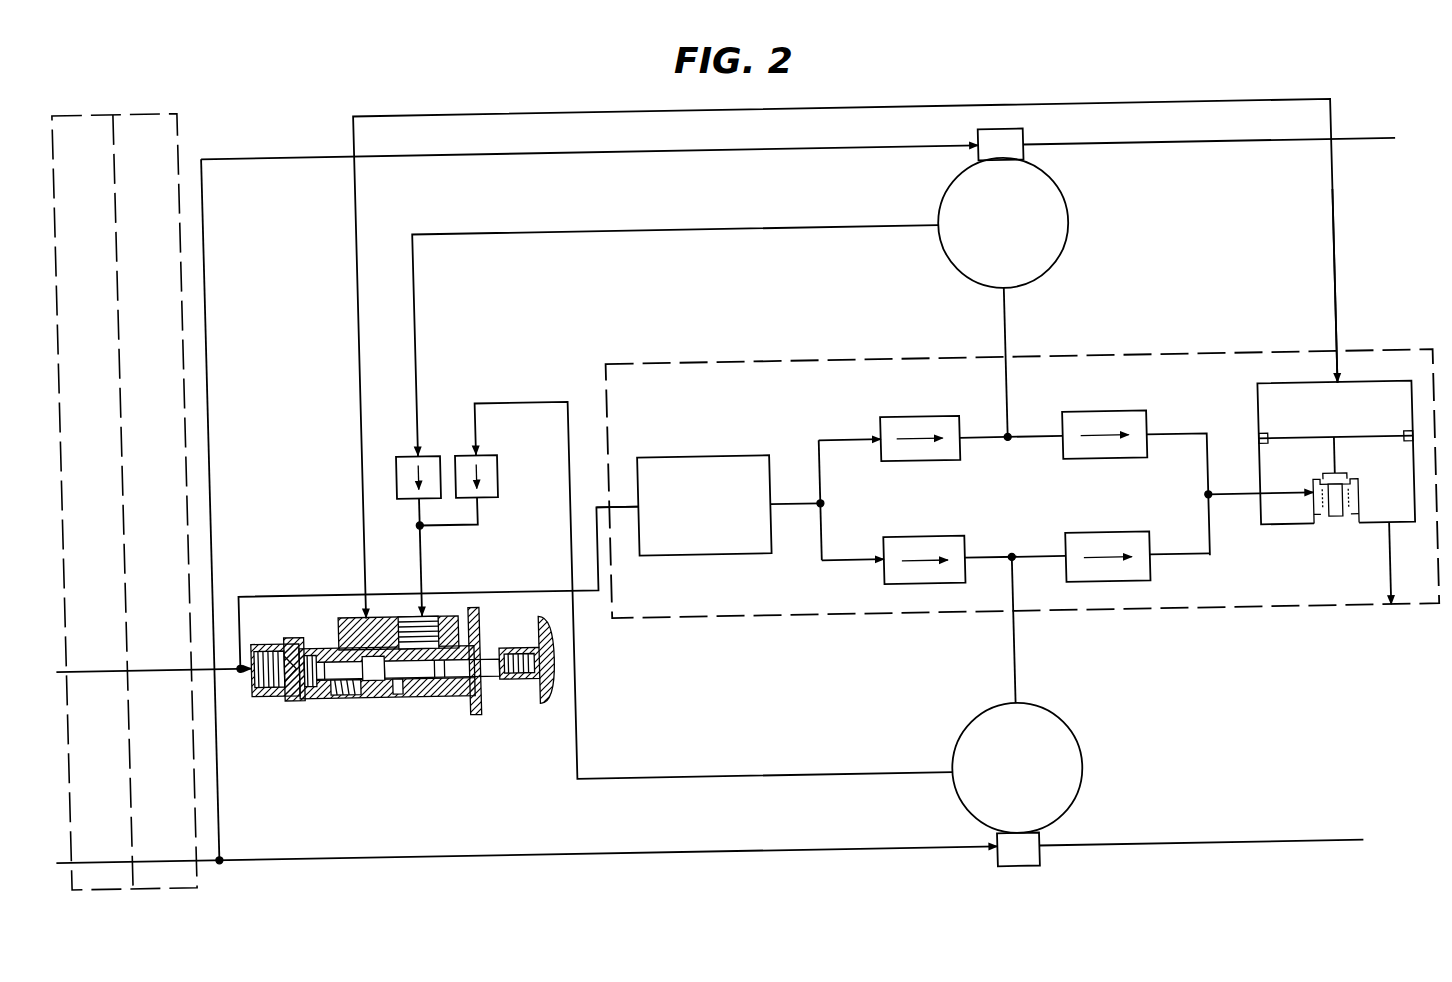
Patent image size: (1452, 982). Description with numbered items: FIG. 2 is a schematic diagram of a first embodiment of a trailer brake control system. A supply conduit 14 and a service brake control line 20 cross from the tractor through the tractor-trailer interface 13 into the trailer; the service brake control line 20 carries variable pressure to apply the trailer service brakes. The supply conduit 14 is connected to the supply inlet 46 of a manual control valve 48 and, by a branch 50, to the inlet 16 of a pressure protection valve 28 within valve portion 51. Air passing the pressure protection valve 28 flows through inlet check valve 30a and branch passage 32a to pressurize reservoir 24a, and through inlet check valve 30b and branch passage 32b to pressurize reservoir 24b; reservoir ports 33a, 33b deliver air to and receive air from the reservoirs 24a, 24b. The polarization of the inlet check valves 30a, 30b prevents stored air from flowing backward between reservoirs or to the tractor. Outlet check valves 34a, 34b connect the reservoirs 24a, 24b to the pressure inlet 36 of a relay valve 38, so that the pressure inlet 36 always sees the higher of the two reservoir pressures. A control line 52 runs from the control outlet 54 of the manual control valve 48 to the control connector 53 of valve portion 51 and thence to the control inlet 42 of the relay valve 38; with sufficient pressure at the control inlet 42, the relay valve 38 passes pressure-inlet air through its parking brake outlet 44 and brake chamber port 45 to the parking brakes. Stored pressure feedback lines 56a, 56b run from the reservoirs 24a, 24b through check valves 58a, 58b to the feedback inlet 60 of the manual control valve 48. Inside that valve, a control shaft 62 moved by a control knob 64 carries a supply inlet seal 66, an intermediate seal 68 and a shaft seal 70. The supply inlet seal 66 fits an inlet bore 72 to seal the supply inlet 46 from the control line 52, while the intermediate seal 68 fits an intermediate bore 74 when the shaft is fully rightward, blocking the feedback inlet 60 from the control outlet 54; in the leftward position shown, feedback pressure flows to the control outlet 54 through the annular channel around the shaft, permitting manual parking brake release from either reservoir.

The tractor-trailer interface 13 is at (111, 812).
The supply conduit 14 is at (108, 671).
The supply inlet 16 is at (604, 507).
The service brake control line 20 is at (153, 862).
The reservoir 24a is at (1003, 208).
The reservoir 24b is at (1017, 784).
The pressure protection valve 28 is at (704, 456).
The inlet check valve 30a is at (898, 417).
The inlet check valve 30b is at (929, 536).
The branch passage 32a is at (1009, 413).
The branch passage 32b is at (1015, 573).
The reservoir port 33a is at (1008, 357).
The reservoir port 33b is at (1016, 640).
The outlet check valve 34a is at (1123, 411).
The outlet check valve 34b is at (1111, 532).
The pressure inlet 36 is at (1212, 496).
The relay valve 38 is at (1258, 410).
The control inlet 42 is at (1342, 381).
The parking brake outlet 44 is at (1390, 528).
The brake chamber port 45 is at (1398, 604).
The supply inlet 46 is at (252, 690).
The manual control valve 48 is at (415, 697).
The branch 50 is at (284, 596).
The valve portion 51 is at (675, 599).
The control line 52 is at (931, 106).
The control connector 53 is at (1335, 351).
The control outlet 54 is at (363, 619).
The stored pressure feedback line 56a is at (493, 233).
The stored pressure feedback line 56b is at (510, 403).
The check valve 58a is at (396, 478).
The check valve 58b is at (498, 477).
The feedback inlet 60 is at (426, 616).
The control shaft 62 is at (474, 660).
The control knob 64 is at (548, 702).
The supply inlet seal 66 is at (308, 689).
The intermediate seal 68 is at (369, 690).
The shaft seal 70 is at (445, 688).
The inlet bore 72 is at (340, 690).
The intermediate bore 74 is at (395, 691).